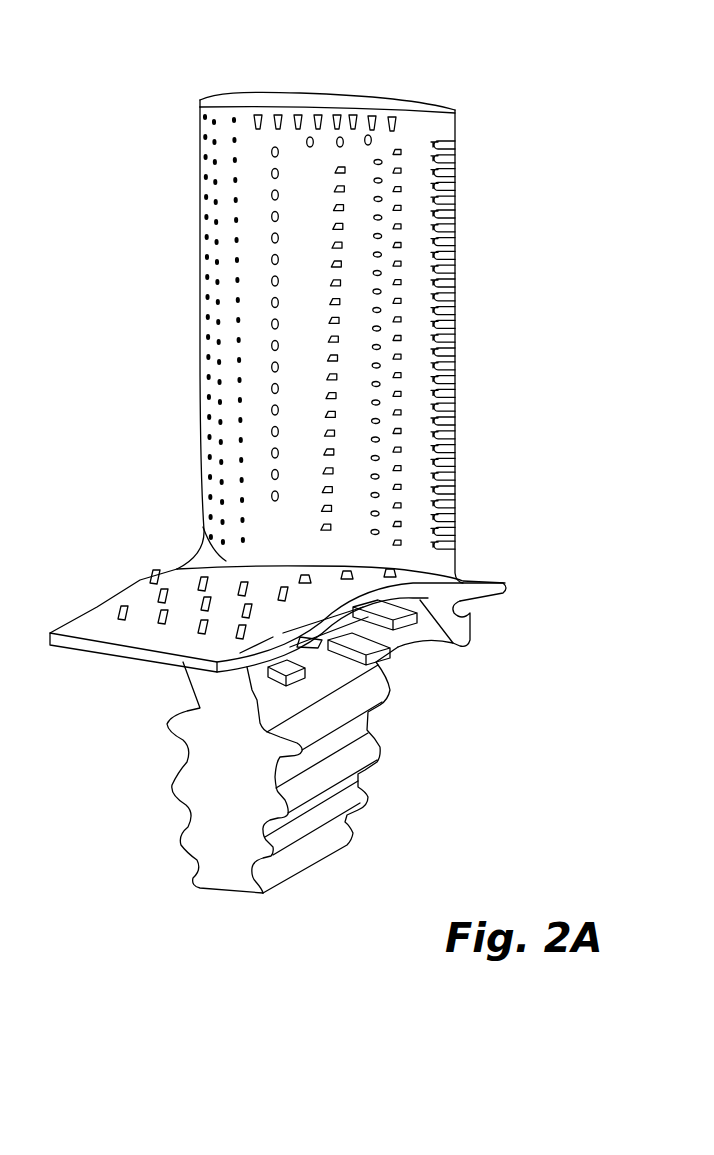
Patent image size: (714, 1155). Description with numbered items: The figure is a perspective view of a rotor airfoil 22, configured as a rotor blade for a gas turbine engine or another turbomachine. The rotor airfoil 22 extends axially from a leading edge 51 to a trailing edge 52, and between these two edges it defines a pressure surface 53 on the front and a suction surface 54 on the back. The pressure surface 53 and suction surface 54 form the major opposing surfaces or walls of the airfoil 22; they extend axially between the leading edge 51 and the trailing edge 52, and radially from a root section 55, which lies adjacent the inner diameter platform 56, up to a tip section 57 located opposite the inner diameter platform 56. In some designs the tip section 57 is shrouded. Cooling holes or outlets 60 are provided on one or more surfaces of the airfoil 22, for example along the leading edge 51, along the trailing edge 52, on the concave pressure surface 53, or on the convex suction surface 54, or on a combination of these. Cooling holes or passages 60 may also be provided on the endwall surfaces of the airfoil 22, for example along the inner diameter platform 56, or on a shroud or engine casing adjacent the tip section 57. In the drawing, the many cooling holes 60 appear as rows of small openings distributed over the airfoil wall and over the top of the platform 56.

The rotor airfoil 22 is at (100, 108).
The leading edge 51 is at (200, 245).
The trailing edge 52 is at (455, 348).
The pressure surface 53 is at (292, 359).
The suction surface 54 is at (405, 95).
The root section 55 is at (202, 547).
The inner diameter platform 56 is at (113, 590).
The tip section 57 is at (352, 108).
The cooling holes 60 is at (337, 207).